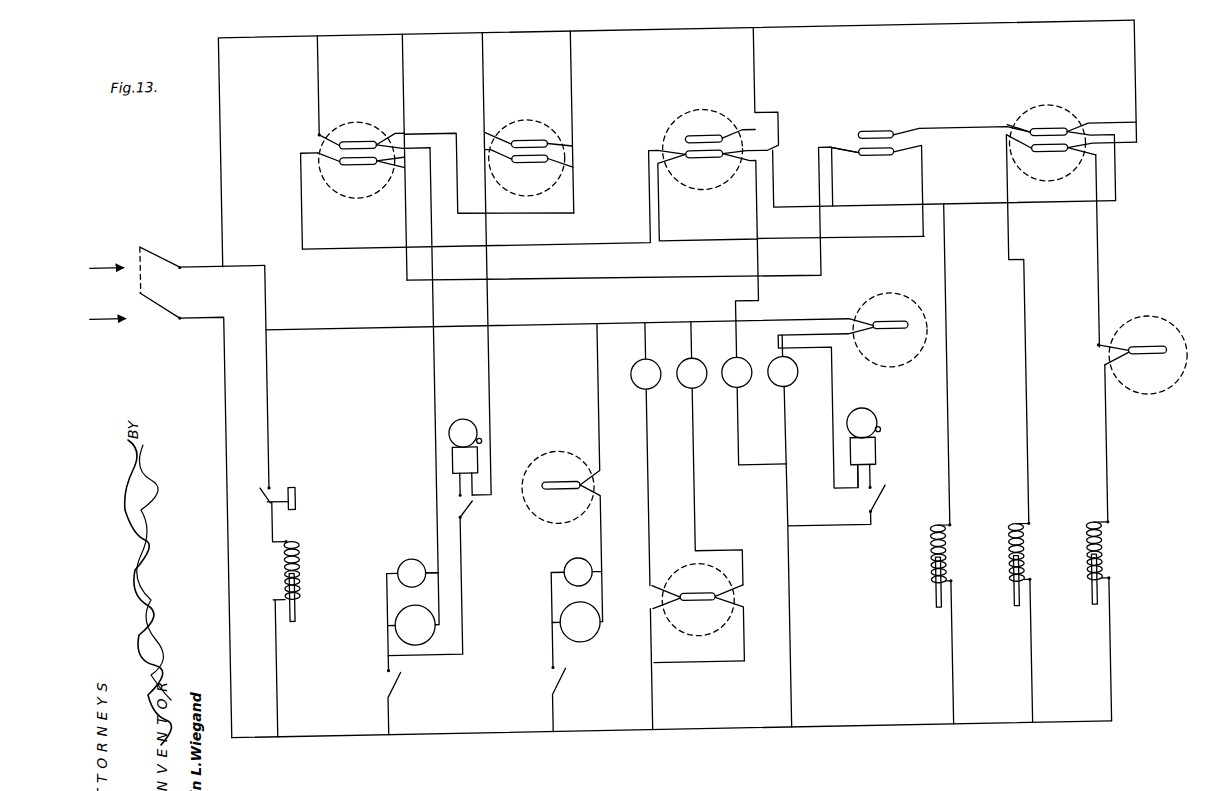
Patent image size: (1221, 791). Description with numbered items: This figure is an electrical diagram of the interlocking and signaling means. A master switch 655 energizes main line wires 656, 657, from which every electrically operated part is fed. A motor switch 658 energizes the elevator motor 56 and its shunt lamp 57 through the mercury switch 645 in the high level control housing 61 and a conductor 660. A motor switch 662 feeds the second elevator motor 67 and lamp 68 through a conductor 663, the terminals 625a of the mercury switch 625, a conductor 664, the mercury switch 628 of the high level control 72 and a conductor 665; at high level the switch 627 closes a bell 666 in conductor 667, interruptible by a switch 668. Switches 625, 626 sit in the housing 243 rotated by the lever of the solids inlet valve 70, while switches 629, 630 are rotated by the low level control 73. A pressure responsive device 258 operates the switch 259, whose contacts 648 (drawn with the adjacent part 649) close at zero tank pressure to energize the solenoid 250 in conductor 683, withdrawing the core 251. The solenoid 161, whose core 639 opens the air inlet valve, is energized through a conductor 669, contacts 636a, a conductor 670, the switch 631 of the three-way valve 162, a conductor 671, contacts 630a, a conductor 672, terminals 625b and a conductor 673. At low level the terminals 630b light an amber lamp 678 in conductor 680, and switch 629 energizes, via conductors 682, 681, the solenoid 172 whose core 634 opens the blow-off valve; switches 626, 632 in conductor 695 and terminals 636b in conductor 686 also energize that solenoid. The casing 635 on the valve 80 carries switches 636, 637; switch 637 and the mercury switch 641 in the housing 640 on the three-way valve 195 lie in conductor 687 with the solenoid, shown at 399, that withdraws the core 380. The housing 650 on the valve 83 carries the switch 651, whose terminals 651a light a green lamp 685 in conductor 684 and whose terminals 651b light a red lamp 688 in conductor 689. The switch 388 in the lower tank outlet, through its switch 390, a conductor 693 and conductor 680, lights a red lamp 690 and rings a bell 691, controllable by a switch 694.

The master switch 655 is at (148, 236).
The main line wire 656 is at (227, 309).
The main line wire 657 is at (646, 29).
The conductor 673 is at (322, 70).
The solids inlet valve 70 is at (375, 134).
The mercury switch 625 is at (362, 136).
The switch housing 243 is at (341, 135).
The terminals 625a is at (384, 134).
The terminals 625b is at (341, 147).
The conductor 664 is at (448, 128).
The mercury switch 626 is at (362, 156).
The conductor 667 is at (492, 95).
The high level control 72 is at (524, 133).
The mercury switch 627 is at (533, 138).
The conductor 665 is at (579, 79).
The mercury switch 628 is at (533, 160).
The low level control 73 is at (689, 130).
The conductor 682 is at (748, 129).
The conductor 680 is at (762, 77).
The mercury switch 629 is at (712, 136).
The terminals 630a is at (690, 152).
The mercury switch 630 is at (707, 158).
The terminals 630b is at (720, 158).
The motor switch 662 is at (779, 183).
The three-way valve 162 is at (858, 137).
The mercury switch 631 is at (876, 134).
The conductor 670 is at (938, 130).
The conductor 671 is at (929, 182).
The mercury switch 632 is at (880, 159).
The conductor 695 is at (591, 276).
The valve 80 is at (1033, 127).
The casing 635 is at (1043, 125).
The mercury switch 636 is at (1057, 132).
The conductor 686 is at (1132, 126).
The contacts 636a is at (1034, 132).
The terminals 636b is at (1078, 134).
The conductor 687 is at (1143, 136).
The mercury switch 637 is at (1054, 158).
The conductor 672 is at (587, 241).
The switch 388 is at (886, 300).
The switch 390 is at (897, 326).
The red light 688 is at (840, 320).
The three-way valve 195 is at (1139, 320).
The housing 640 is at (1160, 350).
The mercury switch 641 is at (1148, 362).
The conductor 683 is at (270, 392).
The conductor 660 is at (547, 326).
The conductor 684 is at (640, 362).
The conductor 689 is at (697, 353).
The green light 685 is at (640, 389).
The signal lamp 678 is at (733, 389).
The red light 690 is at (785, 388).
The conductor 693 is at (786, 450).
The bell 691 is at (874, 423).
The switch 694 is at (877, 502).
The conductor 681 is at (949, 450).
The conductor 669 is at (1028, 451).
The bell 666 is at (462, 414).
The conductor 663 is at (433, 443).
The housing 61 is at (540, 457).
The mercury switch 645 is at (560, 479).
The contacts 648 is at (256, 481).
The contact arm 649 is at (271, 478).
The pressure responsive device 258 is at (298, 490).
The switch 259 is at (264, 500).
The solenoid 250 is at (298, 551).
The core 251 is at (292, 614).
The lamp 68 is at (412, 556).
The motor 67 is at (413, 603).
The light 57 is at (565, 561).
The motor 56 is at (578, 640).
The housing 650 is at (684, 584).
The valve 83 is at (685, 566).
The terminals 651a is at (675, 598).
The mercury switch 651 is at (694, 600).
The terminals 651b is at (716, 595).
The switch 668 is at (467, 508).
The motor switch 658 is at (556, 683).
The solenoid 172 is at (930, 562).
The core 634 is at (933, 602).
The solenoid 161 is at (1008, 566).
The core 639 is at (1012, 610).
The solenoid coil 399 is at (1086, 560).
The core 380 is at (1090, 604).